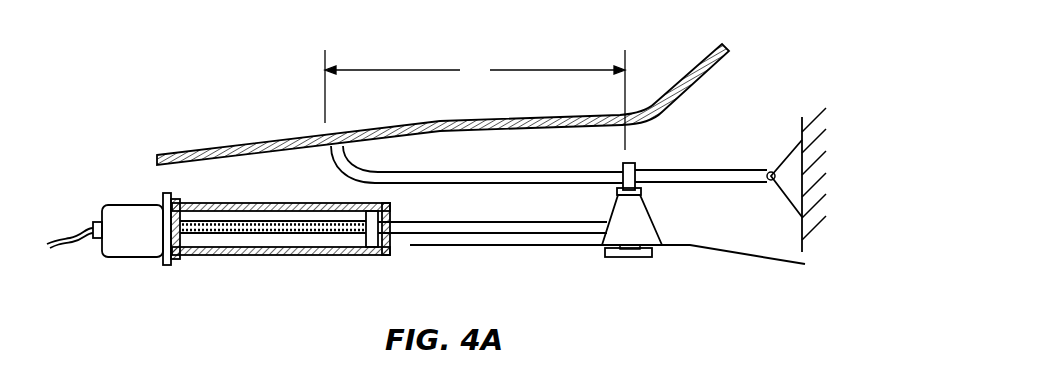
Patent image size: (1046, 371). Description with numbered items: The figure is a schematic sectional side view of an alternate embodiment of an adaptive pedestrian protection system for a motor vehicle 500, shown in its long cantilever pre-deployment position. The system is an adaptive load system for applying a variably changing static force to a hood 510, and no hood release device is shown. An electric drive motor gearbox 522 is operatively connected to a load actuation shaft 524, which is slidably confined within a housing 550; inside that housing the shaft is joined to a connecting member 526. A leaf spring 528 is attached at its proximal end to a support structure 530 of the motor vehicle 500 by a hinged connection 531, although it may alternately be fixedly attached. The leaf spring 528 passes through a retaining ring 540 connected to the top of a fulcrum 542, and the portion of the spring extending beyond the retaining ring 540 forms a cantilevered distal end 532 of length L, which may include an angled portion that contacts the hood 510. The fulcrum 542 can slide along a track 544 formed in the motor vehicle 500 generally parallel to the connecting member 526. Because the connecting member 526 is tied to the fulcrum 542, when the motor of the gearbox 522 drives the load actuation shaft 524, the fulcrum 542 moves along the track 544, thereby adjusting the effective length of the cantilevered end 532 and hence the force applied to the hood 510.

The motor vehicle 500 is at (170, 107).
The hood 510 is at (495, 127).
The electric drive motor gearbox 522 is at (127, 247).
The load actuation shaft 524 is at (243, 240).
The connecting member 526 is at (462, 226).
The leaf spring 528 is at (725, 172).
The support structure 530 is at (804, 132).
The hinged connection 531 is at (773, 182).
The cantilevered distal end 532 is at (373, 168).
The retaining ring 540 is at (632, 164).
The fulcrum 542 is at (640, 220).
The track 544 is at (517, 250).
The housing 550 is at (342, 255).